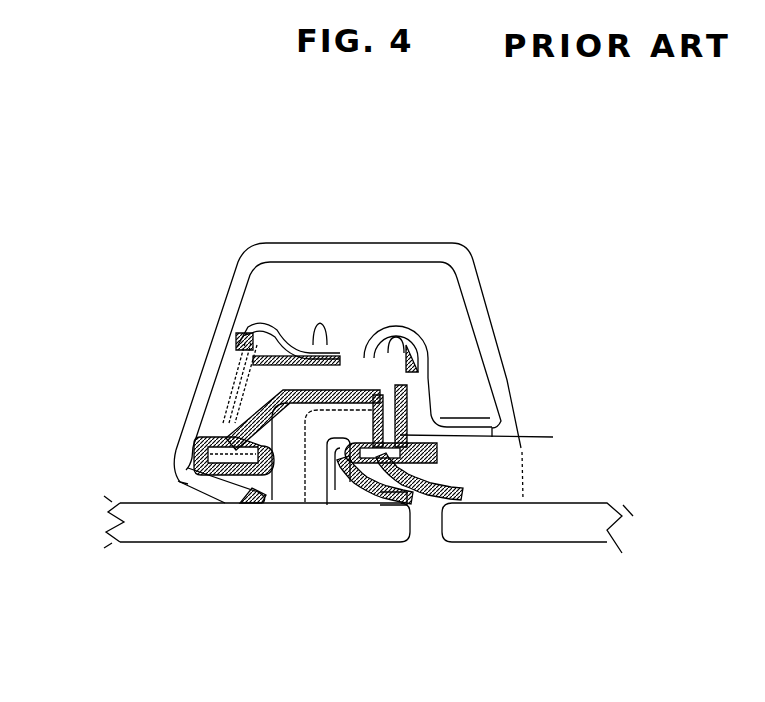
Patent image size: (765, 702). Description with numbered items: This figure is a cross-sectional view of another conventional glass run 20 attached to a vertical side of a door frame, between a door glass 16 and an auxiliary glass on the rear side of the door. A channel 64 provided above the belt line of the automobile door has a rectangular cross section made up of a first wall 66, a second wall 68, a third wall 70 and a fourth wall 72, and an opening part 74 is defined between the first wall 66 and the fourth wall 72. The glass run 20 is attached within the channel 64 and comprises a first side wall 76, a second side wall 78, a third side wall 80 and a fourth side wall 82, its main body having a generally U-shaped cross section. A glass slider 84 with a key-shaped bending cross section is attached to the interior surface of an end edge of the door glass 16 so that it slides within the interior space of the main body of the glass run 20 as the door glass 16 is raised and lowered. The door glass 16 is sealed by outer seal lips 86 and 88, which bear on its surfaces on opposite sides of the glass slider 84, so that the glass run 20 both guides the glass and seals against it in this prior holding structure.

The door glass 16 is at (173, 542).
The glass run 20 is at (183, 480).
The channel 64 is at (238, 336).
The first wall 66 is at (371, 482).
The second wall 68 is at (540, 436).
The third wall 70 is at (272, 357).
The fourth wall 72 is at (236, 440).
The opening part 74 is at (287, 480).
The first side wall 76 is at (385, 402).
The second side wall 78 is at (395, 412).
The third side wall 80 is at (340, 385).
The fourth side wall 82 is at (233, 420).
The glass slider 84 is at (359, 487).
The outer seal lip 86 is at (392, 507).
The outer seal lip 88 is at (238, 503).